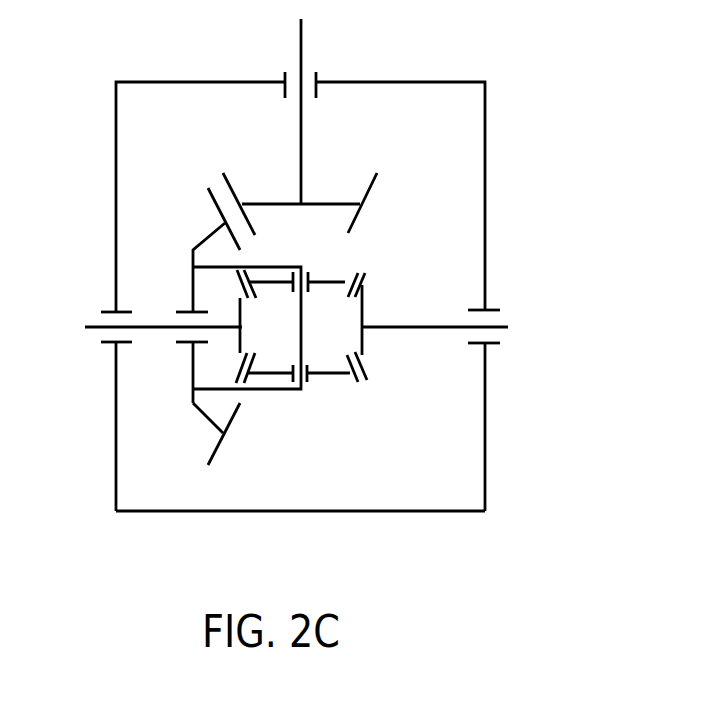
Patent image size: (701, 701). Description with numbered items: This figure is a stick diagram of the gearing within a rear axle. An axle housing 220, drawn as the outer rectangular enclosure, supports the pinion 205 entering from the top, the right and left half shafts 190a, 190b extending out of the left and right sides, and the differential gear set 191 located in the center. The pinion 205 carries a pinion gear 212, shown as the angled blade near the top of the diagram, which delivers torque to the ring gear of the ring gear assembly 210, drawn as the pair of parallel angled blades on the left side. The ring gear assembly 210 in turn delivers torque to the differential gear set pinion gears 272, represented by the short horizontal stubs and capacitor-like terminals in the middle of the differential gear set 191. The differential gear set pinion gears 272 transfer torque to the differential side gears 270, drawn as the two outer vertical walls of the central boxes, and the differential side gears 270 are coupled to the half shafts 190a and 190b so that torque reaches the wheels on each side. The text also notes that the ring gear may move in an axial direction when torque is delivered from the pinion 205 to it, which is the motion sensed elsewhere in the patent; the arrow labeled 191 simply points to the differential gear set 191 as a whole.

The pinion 205 is at (301, 42).
The axle housing 220 is at (485, 172).
The pinion gear 212 is at (330, 202).
The ring gear assembly 210 is at (200, 237).
The right half shaft 190a is at (88, 328).
The left half shaft 190b is at (505, 328).
The differential gear set 191 is at (295, 353).
The differential side gears 270 is at (240, 350).
The differential gear set pinion gears 272 is at (340, 279).